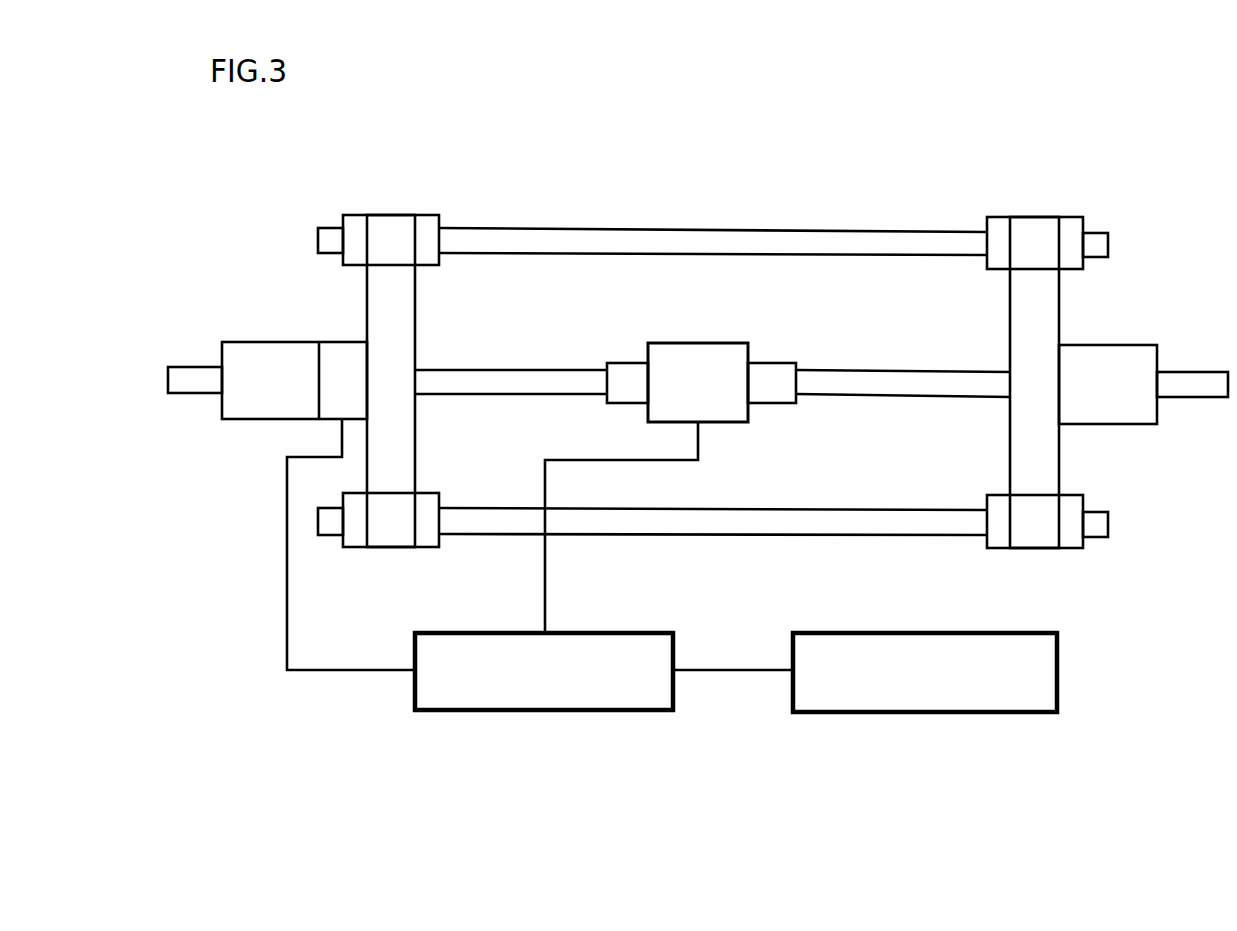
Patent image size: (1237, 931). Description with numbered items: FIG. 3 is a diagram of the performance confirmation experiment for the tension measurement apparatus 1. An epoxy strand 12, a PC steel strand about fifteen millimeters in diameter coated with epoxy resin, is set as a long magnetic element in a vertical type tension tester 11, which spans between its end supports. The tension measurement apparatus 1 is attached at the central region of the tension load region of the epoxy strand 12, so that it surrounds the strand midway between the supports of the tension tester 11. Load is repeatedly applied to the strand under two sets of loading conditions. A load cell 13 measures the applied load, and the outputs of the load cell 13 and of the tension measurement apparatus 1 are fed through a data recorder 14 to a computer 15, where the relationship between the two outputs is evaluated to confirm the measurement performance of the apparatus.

The tension measurement apparatus 1 is at (702, 341).
The vertical type tension tester 11 is at (1065, 214).
The epoxy strand 12 is at (895, 352).
The load cell 13 is at (345, 357).
The data recorder 14 is at (575, 693).
The computer 15 is at (970, 695).